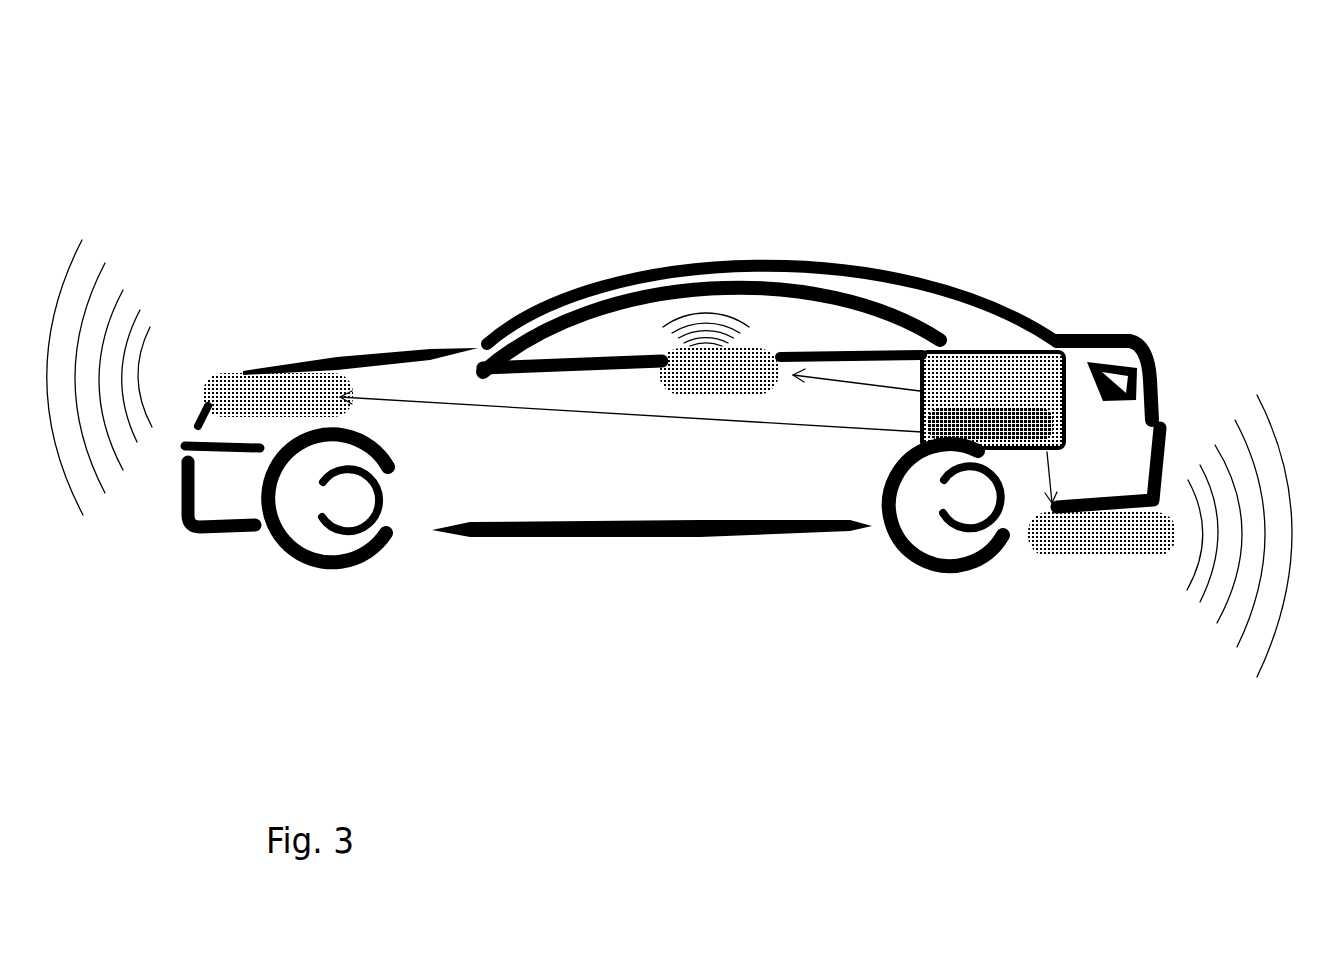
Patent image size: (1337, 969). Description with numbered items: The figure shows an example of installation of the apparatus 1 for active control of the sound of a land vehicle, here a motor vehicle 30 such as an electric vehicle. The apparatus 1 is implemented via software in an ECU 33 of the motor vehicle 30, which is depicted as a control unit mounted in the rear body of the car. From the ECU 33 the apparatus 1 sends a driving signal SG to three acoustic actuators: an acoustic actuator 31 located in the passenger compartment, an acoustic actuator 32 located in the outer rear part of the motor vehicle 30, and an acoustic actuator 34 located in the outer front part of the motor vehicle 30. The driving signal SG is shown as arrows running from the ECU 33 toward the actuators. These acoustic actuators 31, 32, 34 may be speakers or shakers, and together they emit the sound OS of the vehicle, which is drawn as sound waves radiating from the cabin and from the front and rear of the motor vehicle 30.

The motor vehicle 30 is at (412, 238).
The acoustic actuator 31 is at (670, 380).
The acoustic actuator 32 is at (1062, 553).
The ECU 33 is at (1007, 362).
The apparatus for active control of the sound of a land vehicle 1 is at (1010, 412).
The acoustic actuator 34 is at (245, 400).
The driving signal SG is at (726, 436).
The sound of the vehicle OS is at (98, 542).